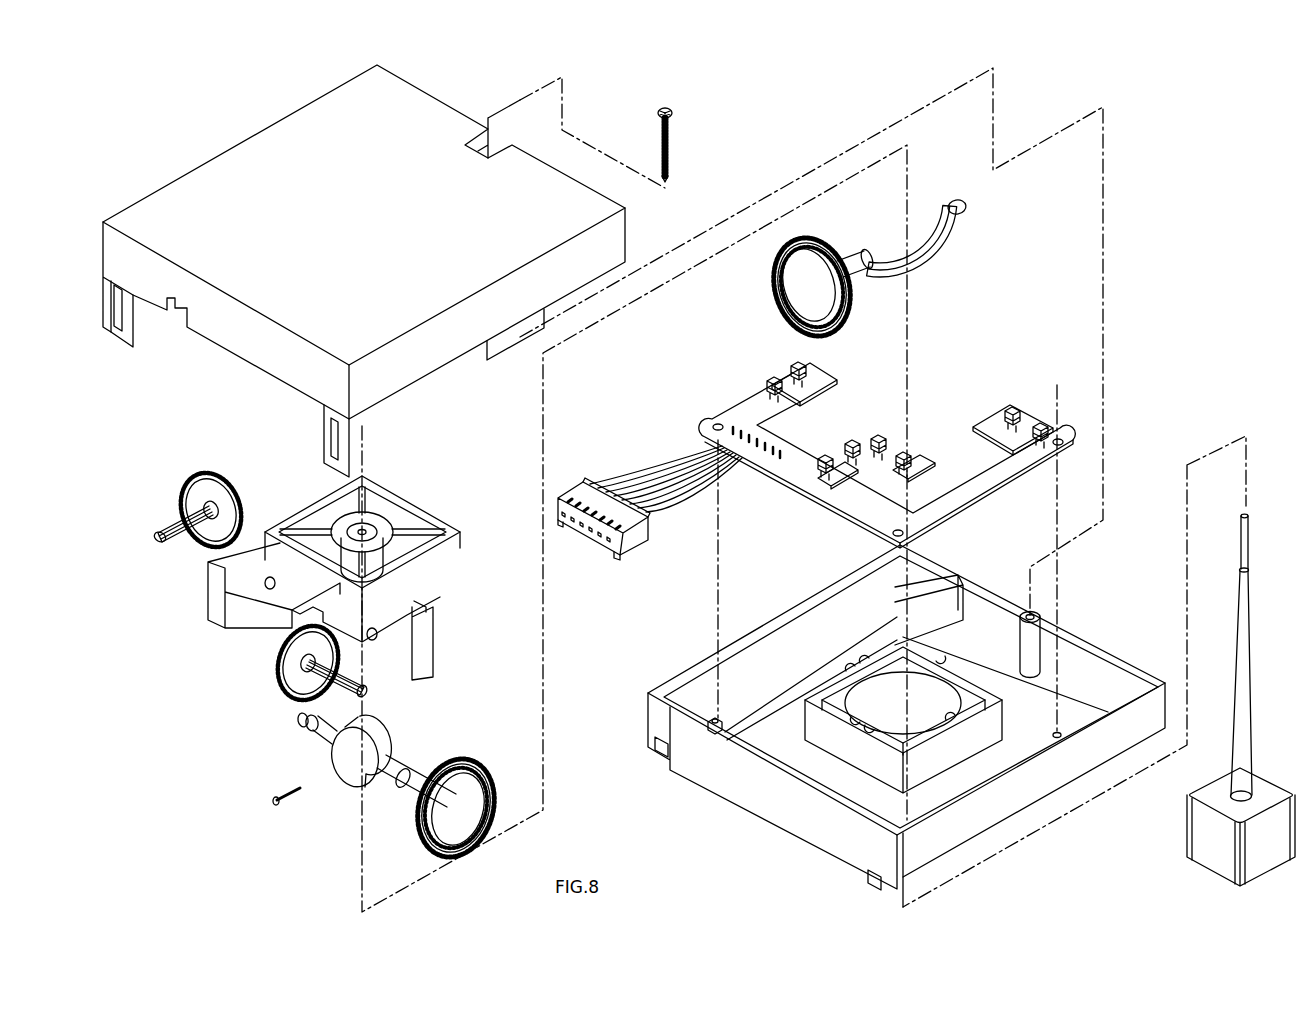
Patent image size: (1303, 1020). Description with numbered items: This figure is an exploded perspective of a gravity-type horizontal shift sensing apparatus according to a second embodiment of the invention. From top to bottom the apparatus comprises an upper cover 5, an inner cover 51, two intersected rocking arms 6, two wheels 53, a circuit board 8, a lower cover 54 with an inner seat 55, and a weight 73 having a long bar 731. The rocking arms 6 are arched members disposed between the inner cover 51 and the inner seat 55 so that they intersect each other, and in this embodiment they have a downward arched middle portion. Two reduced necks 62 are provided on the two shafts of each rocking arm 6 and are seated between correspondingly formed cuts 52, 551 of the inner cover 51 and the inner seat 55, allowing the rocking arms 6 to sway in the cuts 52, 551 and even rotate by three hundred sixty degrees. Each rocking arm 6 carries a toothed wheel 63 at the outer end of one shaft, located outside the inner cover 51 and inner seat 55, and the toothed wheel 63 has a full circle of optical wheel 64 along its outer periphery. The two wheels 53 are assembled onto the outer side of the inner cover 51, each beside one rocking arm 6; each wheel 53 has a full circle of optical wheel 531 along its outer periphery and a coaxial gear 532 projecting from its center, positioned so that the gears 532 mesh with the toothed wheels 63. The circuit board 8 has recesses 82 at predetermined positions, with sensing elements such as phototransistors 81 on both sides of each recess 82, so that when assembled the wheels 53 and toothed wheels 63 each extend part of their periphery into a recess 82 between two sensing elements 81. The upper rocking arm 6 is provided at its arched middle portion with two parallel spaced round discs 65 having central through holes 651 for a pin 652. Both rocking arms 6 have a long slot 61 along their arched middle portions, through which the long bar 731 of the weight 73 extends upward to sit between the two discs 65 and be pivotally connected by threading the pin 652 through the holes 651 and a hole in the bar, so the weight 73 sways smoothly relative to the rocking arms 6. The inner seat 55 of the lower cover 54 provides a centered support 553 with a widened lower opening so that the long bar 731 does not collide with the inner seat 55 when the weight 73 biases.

The upper cover 5 is at (265, 185).
The inner cover 51 is at (400, 504).
The cuts 52 is at (430, 620).
The wheels 53 is at (270, 585).
The optical wheel 531 is at (193, 477).
The gear 532 is at (168, 528).
The rocking arms 6 is at (418, 781).
The long slot 61 is at (926, 255).
The reduced necks 62 is at (302, 721).
The toothed wheel 63 is at (646, 547).
The optical wheel 64 is at (495, 788).
The round discs 65 is at (377, 737).
The central through holes 651 is at (352, 757).
The pin 652 is at (278, 797).
The circuit board 8 is at (728, 420).
The phototransistors 81 is at (766, 388).
The recesses 82 is at (800, 402).
The lower cover 54 is at (806, 820).
The inner seat 55 is at (823, 727).
The cuts 551 is at (957, 718).
The centered support 553 is at (905, 680).
The weight 73 is at (1262, 797).
The long bar 731 is at (1247, 615).